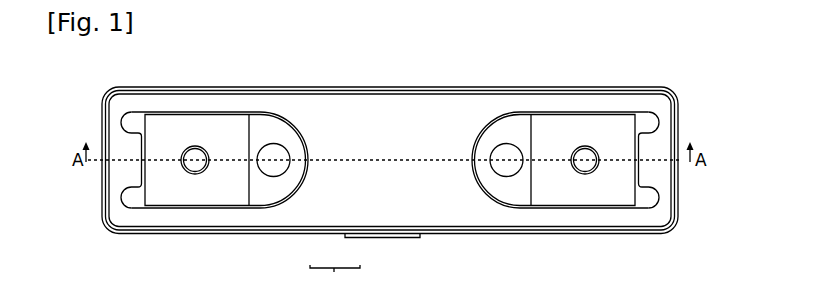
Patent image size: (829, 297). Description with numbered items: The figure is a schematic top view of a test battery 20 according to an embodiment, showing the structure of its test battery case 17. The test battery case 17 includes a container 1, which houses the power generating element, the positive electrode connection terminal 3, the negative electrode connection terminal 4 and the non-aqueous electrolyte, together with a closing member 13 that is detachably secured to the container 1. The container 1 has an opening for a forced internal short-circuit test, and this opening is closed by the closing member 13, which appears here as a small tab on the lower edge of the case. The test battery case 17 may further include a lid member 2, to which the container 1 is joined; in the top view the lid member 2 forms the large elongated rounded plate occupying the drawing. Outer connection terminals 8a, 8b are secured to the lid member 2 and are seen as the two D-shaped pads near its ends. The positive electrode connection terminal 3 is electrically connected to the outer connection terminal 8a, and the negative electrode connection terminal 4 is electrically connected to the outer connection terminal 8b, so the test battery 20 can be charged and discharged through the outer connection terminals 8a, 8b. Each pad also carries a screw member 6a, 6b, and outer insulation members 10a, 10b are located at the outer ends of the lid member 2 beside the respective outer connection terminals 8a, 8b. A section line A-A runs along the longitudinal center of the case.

The container 1 is at (292, 233).
The lid member 2 is at (331, 130).
The positive electrode connection terminal 3 is at (278, 150).
The negative electrode connection terminal 4 is at (504, 152).
The screw member 6a is at (195, 152).
The screw member 6b is at (584, 152).
The outer connection terminal 8a is at (222, 125).
The outer connection terminal 8b is at (552, 142).
The outer insulation member 10a is at (134, 124).
The outer insulation member 10b is at (643, 123).
The closing member 13 is at (380, 238).
The test battery case 17 is at (335, 278).
The test battery 20 is at (678, 78).